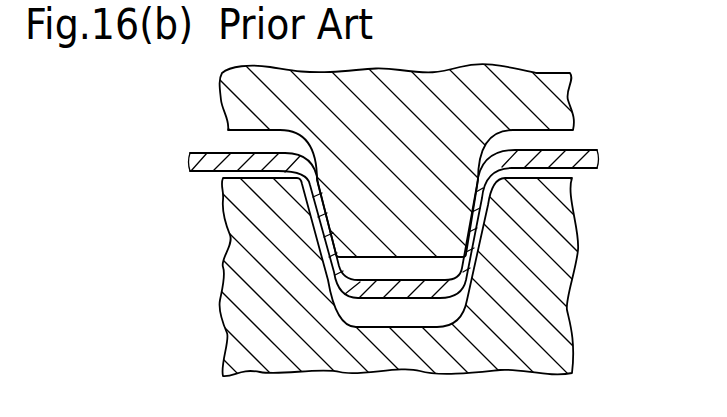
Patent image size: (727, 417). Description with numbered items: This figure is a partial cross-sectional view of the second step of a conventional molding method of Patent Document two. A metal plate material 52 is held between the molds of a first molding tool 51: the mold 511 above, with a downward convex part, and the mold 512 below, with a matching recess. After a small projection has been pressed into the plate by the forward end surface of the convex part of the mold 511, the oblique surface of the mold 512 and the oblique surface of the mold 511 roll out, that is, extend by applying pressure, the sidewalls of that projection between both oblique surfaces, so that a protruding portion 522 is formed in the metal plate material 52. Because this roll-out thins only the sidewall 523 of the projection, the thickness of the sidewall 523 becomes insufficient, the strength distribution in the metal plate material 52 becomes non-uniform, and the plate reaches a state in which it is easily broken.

The first molding tool 51 is at (640, 85).
The mold 511 is at (565, 105).
The mold 512 is at (565, 227).
The metal plate material 52 is at (193, 152).
The protruding portion 522 is at (359, 302).
The sidewall 523 is at (474, 234).